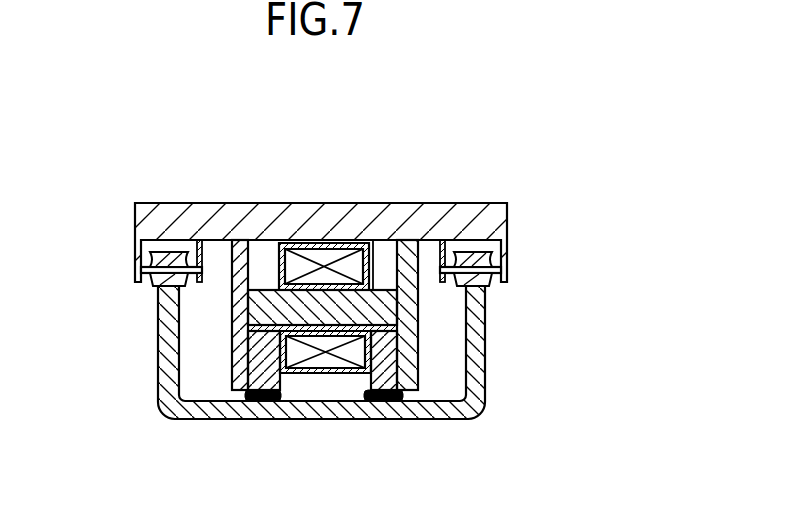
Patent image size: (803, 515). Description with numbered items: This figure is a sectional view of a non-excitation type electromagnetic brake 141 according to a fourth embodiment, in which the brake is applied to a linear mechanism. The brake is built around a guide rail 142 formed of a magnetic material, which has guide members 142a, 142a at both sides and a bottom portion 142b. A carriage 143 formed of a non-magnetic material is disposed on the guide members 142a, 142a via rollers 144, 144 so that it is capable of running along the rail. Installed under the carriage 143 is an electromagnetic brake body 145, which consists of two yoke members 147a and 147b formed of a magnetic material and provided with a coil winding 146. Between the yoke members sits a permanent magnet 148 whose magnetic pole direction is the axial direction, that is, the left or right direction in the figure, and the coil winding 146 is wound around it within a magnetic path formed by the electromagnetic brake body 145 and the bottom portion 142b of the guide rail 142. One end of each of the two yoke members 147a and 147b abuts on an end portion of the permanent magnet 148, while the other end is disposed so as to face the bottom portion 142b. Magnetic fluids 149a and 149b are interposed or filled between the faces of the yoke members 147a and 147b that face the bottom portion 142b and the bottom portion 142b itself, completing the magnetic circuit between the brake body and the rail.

The non-excitation type electromagnetic brake 141 is at (423, 113).
The guide rail 142 is at (203, 420).
The guide member 142a is at (158, 325).
The bottom portion 142b is at (347, 420).
The carriage 143 is at (218, 203).
The roller 144 is at (150, 288).
The electromagnetic brake body 145 is at (215, 348).
The coil winding 146 is at (328, 246).
The yoke member 147a is at (258, 370).
The yoke member 147b is at (392, 378).
The permanent magnet 148 is at (383, 285).
The magnetic fluid 149a is at (258, 402).
The magnetic fluid 149b is at (383, 403).